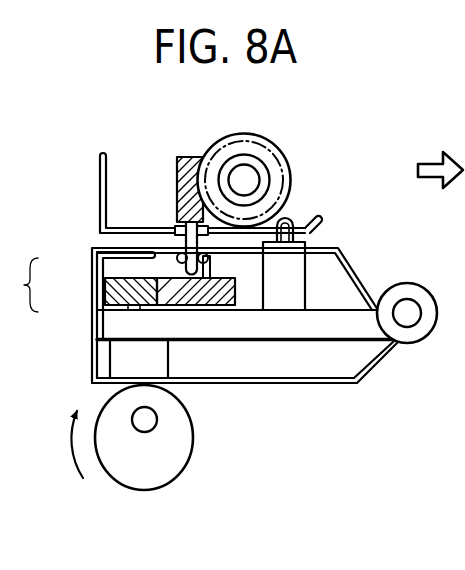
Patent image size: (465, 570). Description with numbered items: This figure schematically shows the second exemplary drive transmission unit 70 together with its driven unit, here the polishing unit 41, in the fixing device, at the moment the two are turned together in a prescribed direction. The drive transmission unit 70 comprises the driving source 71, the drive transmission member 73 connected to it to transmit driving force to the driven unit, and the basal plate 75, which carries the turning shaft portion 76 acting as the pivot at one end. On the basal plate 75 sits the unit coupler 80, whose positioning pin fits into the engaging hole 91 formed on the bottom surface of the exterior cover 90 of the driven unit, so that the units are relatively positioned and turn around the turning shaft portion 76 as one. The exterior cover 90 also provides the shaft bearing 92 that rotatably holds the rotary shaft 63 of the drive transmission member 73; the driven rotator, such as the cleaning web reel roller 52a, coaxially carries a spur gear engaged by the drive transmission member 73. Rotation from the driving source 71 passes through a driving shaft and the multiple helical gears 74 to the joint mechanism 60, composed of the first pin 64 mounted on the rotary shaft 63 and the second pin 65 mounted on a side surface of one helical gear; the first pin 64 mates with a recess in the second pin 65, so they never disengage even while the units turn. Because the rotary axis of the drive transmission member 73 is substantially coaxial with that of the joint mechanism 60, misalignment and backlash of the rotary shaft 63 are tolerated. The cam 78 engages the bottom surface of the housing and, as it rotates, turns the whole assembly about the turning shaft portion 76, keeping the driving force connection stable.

The polishing unit 41 is at (124, 146).
The cleaning web reel roller 52a is at (250, 177).
The joint mechanism 60 is at (120, 295).
The rotary shaft 63 is at (185, 234).
The first pin 64 is at (165, 256).
The second pin 65 is at (208, 276).
The drive transmission unit 70 is at (374, 256).
The driving source 71 is at (160, 360).
The drive transmission member 73 is at (177, 183).
The helical gears 74 is at (118, 292).
The basal plate 75 is at (262, 332).
The turning shaft portion 76 is at (413, 337).
The cam 78 is at (182, 450).
The unit coupler 80 is at (286, 300).
The exterior cover 90 is at (100, 183).
The engaging hole 91 is at (297, 218).
The shaft bearing 92 is at (205, 236).